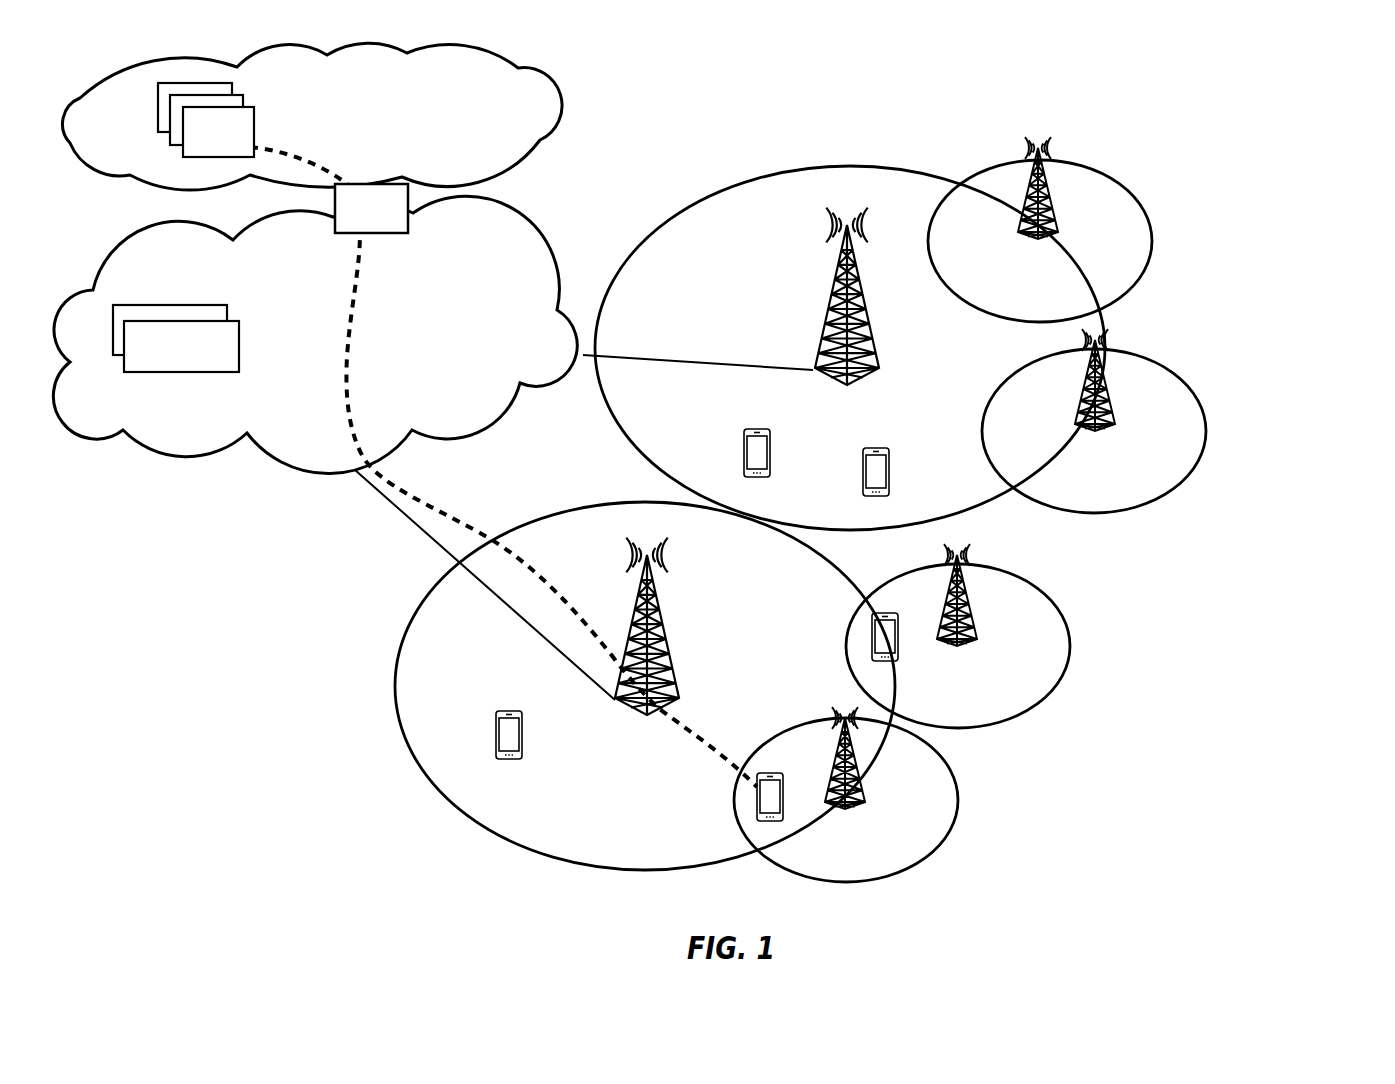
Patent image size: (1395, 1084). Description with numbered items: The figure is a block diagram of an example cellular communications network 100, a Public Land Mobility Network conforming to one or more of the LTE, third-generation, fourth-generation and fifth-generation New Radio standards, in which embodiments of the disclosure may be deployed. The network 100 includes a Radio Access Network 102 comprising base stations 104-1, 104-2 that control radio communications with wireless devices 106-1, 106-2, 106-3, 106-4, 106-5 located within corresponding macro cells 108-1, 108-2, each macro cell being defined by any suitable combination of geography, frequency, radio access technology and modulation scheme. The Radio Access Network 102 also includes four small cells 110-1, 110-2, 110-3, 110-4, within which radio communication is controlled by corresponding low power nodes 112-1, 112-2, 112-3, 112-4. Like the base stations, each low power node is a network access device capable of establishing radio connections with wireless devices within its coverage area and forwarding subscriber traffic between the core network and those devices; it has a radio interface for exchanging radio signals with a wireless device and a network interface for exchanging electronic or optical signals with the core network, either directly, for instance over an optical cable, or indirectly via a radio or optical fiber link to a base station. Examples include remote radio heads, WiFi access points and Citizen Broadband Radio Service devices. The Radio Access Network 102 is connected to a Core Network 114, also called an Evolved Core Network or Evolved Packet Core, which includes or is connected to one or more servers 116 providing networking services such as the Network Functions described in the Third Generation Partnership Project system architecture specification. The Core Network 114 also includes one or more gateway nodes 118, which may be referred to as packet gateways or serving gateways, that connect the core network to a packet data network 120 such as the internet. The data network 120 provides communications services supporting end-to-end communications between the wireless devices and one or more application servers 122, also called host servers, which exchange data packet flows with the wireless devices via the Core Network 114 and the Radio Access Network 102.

The cellular communications network 100 is at (1278, 136).
The Radio Access Network 102 is at (1150, 730).
The base station 104-1 is at (672, 655).
The base station 104-2 is at (872, 345).
The wireless device 106-1 is at (518, 759).
The wireless device 106-2 is at (773, 773).
The wireless device 106-3 is at (893, 660).
The wireless device 106-4 is at (770, 445).
The wireless device 106-5 is at (889, 465).
The macro cell 108-1 is at (493, 674).
The macro cell 108-2 is at (752, 273).
The small cell 110-1 is at (958, 805).
The small cell 110-2 is at (1070, 645).
The small cell 110-3 is at (1206, 430).
The small cell 110-4 is at (1152, 236).
The low power node 112-1 is at (855, 810).
The low power node 112-2 is at (962, 645).
The low power node 112-3 is at (1100, 430).
The low power node 112-4 is at (1040, 237).
The core network 114 is at (417, 391).
The server 116 is at (194, 372).
The gateway node 118 is at (398, 234).
The packet data network 120 is at (417, 147).
The application server 122 is at (255, 136).